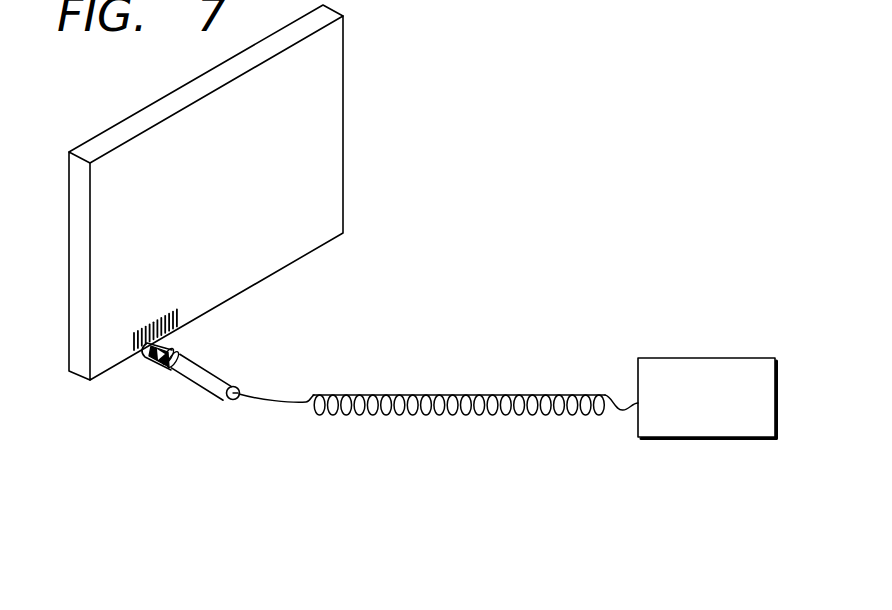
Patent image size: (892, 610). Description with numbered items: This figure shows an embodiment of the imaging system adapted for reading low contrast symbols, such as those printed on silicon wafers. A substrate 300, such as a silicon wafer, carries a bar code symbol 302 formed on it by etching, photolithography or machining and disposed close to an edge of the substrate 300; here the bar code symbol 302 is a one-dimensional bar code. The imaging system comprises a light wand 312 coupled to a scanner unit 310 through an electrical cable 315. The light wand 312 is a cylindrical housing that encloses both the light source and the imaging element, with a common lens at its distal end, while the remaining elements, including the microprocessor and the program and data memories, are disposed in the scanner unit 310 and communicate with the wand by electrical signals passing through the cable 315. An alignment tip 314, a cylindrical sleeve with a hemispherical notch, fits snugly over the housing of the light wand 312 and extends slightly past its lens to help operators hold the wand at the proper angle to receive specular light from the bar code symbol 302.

The substrate 300 is at (343, 78).
The bar code symbol 302 is at (141, 332).
The scanner unit 310 is at (706, 357).
The light wand 312 is at (213, 378).
The alignment tip 314 is at (160, 367).
The electrical cable 315 is at (463, 394).